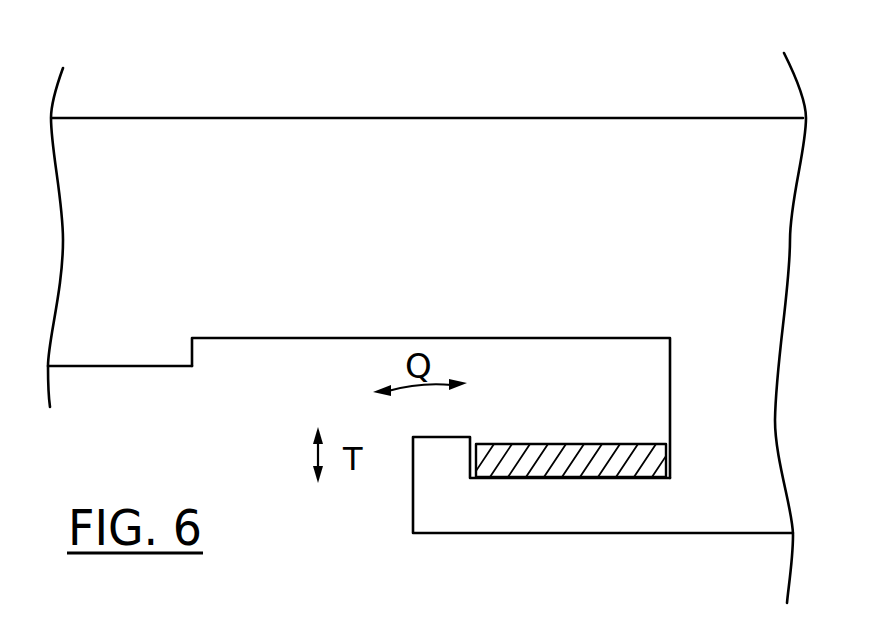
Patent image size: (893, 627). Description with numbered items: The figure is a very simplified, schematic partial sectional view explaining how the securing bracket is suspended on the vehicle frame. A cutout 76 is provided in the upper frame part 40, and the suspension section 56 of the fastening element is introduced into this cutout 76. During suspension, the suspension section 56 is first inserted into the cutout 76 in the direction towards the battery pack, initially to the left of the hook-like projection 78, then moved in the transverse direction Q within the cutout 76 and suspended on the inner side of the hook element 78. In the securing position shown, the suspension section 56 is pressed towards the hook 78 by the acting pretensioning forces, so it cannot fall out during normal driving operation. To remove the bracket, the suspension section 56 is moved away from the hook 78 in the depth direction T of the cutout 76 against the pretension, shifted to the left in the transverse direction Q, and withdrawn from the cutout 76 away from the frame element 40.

The upper frame part 40 is at (378, 166).
The suspension section 56 is at (563, 457).
The cutout 76 is at (272, 400).
The hook-like projection 78 is at (541, 515).